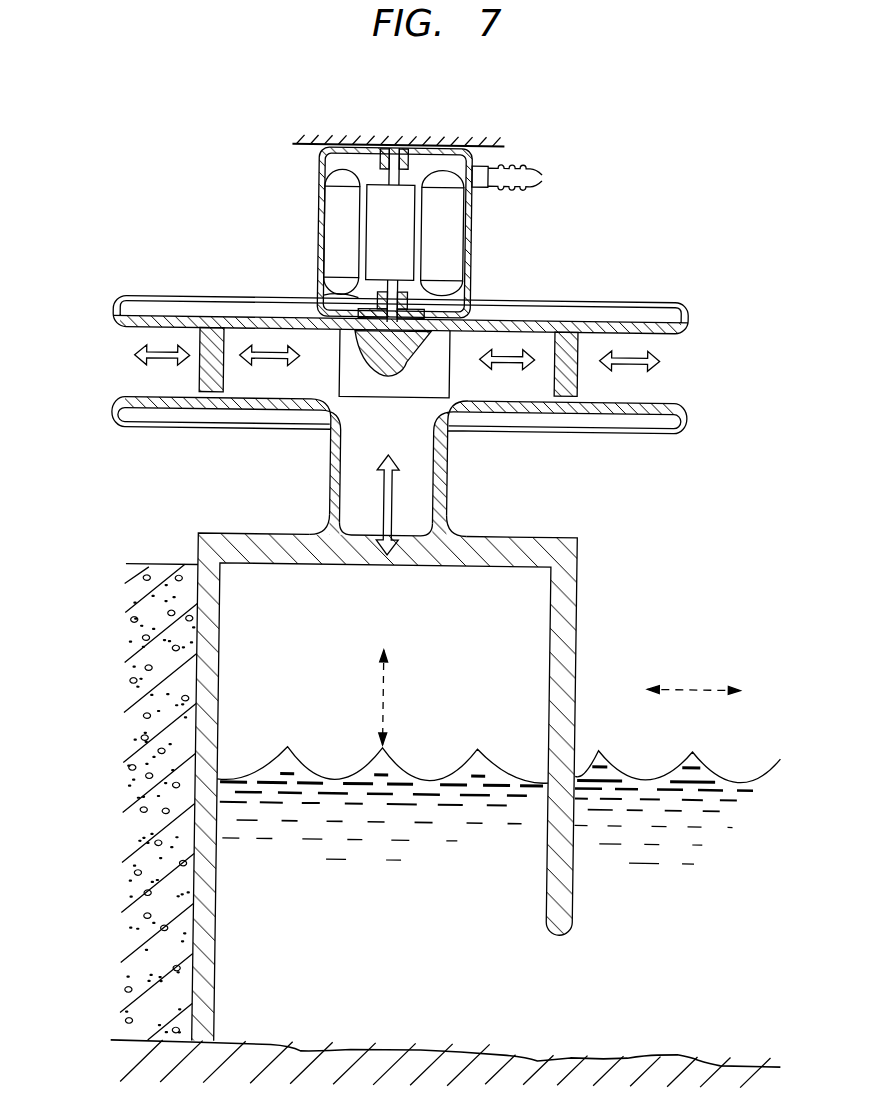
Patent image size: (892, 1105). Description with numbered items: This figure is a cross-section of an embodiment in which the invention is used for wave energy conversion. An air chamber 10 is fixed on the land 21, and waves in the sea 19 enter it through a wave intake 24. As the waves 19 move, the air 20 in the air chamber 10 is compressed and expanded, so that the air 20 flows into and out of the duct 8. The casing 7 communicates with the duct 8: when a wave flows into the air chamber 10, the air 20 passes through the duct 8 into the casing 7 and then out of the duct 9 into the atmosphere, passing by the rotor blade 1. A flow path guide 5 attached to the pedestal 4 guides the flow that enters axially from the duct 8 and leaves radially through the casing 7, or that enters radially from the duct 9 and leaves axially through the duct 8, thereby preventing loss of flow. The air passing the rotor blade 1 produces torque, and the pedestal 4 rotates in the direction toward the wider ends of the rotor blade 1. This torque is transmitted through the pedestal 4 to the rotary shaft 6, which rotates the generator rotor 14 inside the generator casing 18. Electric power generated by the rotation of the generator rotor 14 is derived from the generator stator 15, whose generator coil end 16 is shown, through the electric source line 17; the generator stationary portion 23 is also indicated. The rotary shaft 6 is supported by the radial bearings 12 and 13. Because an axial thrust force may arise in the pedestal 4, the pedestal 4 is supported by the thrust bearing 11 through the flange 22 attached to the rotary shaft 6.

The rotor blade 1 is at (200, 370).
The pedestal 4 is at (556, 321).
The flow path guide 5 is at (373, 355).
The rotary shaft 6 is at (442, 301).
The casing 7 is at (518, 412).
The duct 8 is at (444, 498).
The duct 9 is at (129, 405).
The air chamber 10 is at (206, 534).
The thrust bearing 11 is at (316, 300).
The radial bearing 12 is at (407, 301).
The radial bearing 13 is at (404, 160).
The generator rotor 14 is at (410, 228).
The generator stator 15 is at (458, 213).
The generator coil end 16 is at (456, 181).
The electric source line 17 is at (537, 175).
The generator casing 18 is at (317, 166).
The waves in the sea 19 is at (745, 880).
The air in the air chamber 20 is at (327, 666).
The land 21 is at (143, 966).
The flange 22 is at (411, 333).
The generator stationary portion 23 is at (387, 148).
The wave intake 24 is at (563, 977).